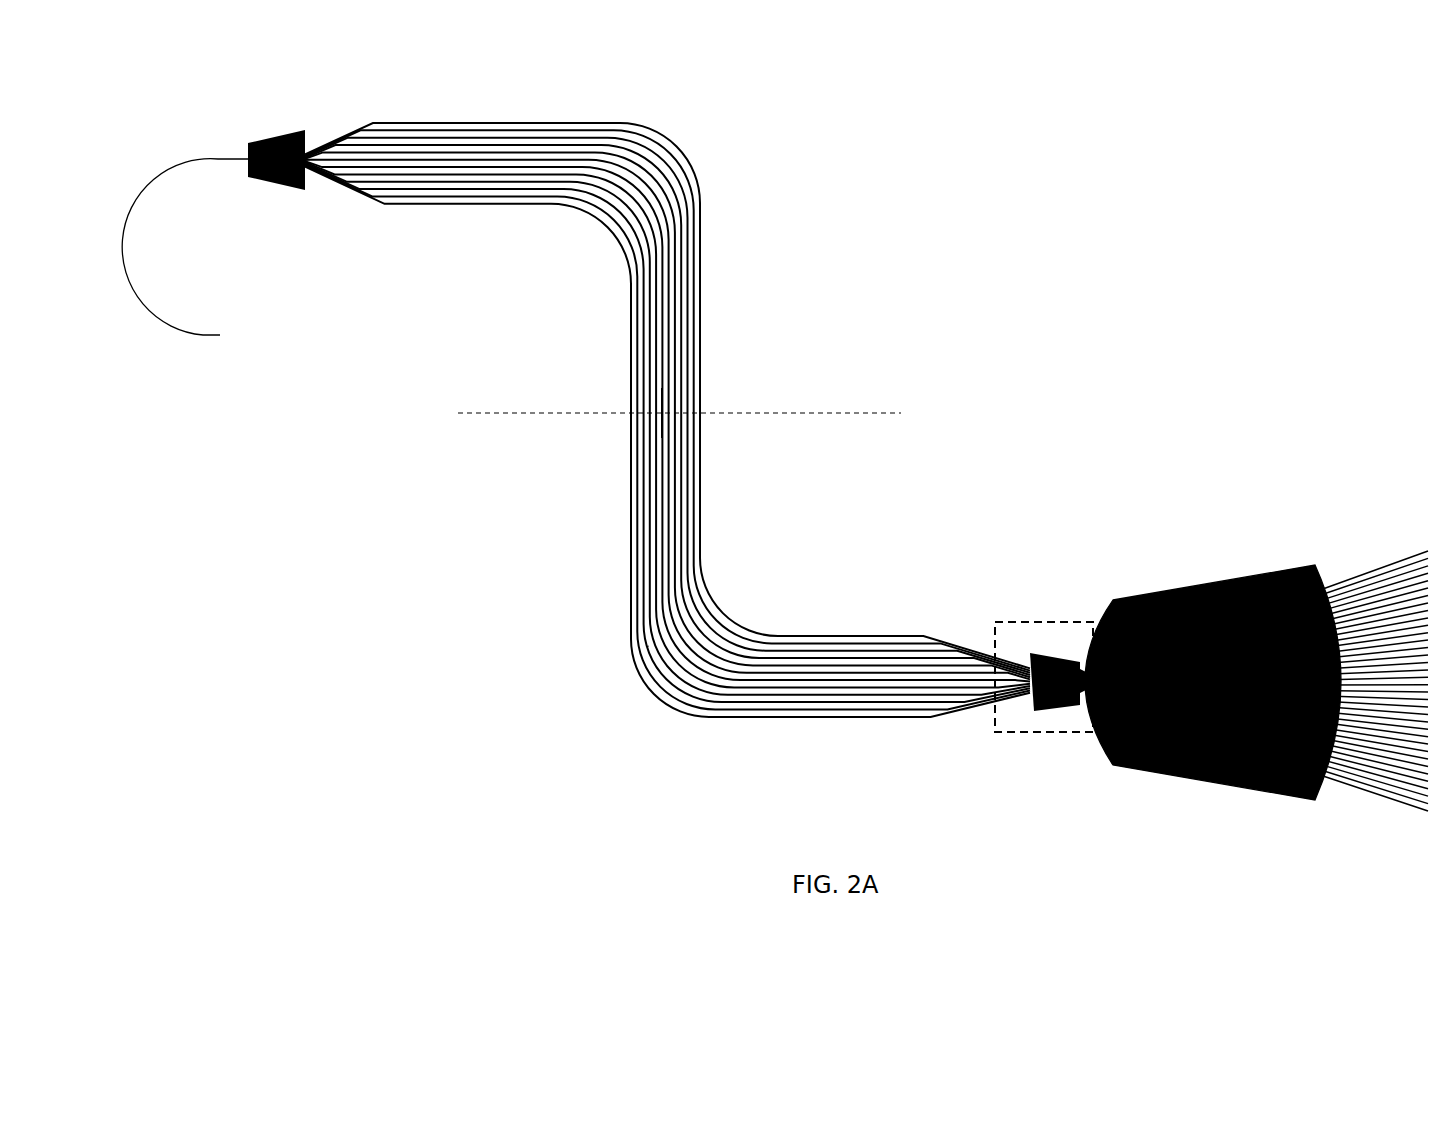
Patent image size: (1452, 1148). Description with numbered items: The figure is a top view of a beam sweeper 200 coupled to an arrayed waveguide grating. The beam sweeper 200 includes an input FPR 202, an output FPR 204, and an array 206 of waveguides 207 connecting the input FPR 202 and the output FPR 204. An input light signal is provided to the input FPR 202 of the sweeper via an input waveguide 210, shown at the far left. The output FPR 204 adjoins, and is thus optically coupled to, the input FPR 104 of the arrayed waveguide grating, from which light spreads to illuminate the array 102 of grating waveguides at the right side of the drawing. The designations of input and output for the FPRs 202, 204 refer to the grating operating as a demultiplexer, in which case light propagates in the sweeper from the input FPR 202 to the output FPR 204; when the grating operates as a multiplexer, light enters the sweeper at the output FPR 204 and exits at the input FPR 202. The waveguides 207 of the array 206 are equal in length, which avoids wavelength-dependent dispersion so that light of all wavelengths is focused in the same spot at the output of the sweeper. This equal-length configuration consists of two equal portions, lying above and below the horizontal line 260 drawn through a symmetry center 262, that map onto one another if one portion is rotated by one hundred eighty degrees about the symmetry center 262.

The beam sweeper 200 is at (1083, 214).
The input FPR 202 is at (263, 173).
The output FPR 204 is at (1047, 650).
The array 206 is at (708, 548).
The waveguides 207 is at (693, 672).
The input waveguide 210 is at (193, 328).
The horizontal line 260 is at (720, 403).
The symmetry center 262 is at (658, 403).
The input FPR 104 is at (1205, 574).
The array 102 is at (1397, 536).